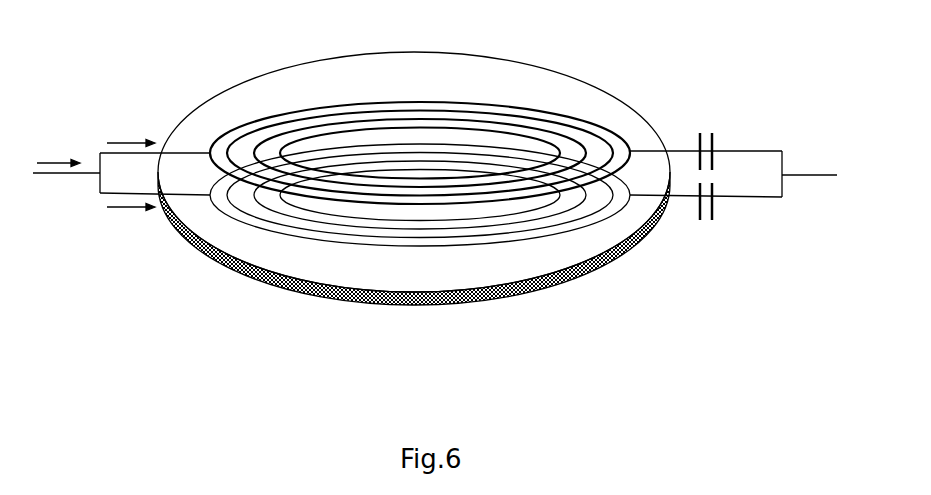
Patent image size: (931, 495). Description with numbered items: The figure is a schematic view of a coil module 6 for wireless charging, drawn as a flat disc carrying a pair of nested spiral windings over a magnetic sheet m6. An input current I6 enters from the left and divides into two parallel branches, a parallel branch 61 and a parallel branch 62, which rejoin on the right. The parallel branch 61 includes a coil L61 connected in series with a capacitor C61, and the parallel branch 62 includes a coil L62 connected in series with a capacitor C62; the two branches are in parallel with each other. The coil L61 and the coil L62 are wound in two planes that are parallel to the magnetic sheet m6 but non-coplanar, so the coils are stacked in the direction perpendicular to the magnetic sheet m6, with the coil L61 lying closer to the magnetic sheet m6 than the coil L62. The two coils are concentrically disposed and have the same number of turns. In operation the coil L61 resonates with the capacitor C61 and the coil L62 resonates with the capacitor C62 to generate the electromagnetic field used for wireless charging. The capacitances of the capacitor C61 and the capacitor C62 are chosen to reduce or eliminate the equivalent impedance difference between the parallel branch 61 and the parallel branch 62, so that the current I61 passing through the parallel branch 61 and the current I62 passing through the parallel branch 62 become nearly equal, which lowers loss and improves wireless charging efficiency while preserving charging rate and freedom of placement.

The coil module 6 is at (433, 50).
The magnetic sheet m6 is at (643, 245).
The parallel branch 61 is at (441, 250).
The parallel branch 62 is at (441, 125).
The coil L61 is at (560, 235).
The coil L62 is at (573, 113).
The capacitor C61 is at (715, 218).
The capacitor C62 is at (713, 136).
The current I6 is at (66, 152).
The current I61 is at (131, 224).
The current I62 is at (131, 131).